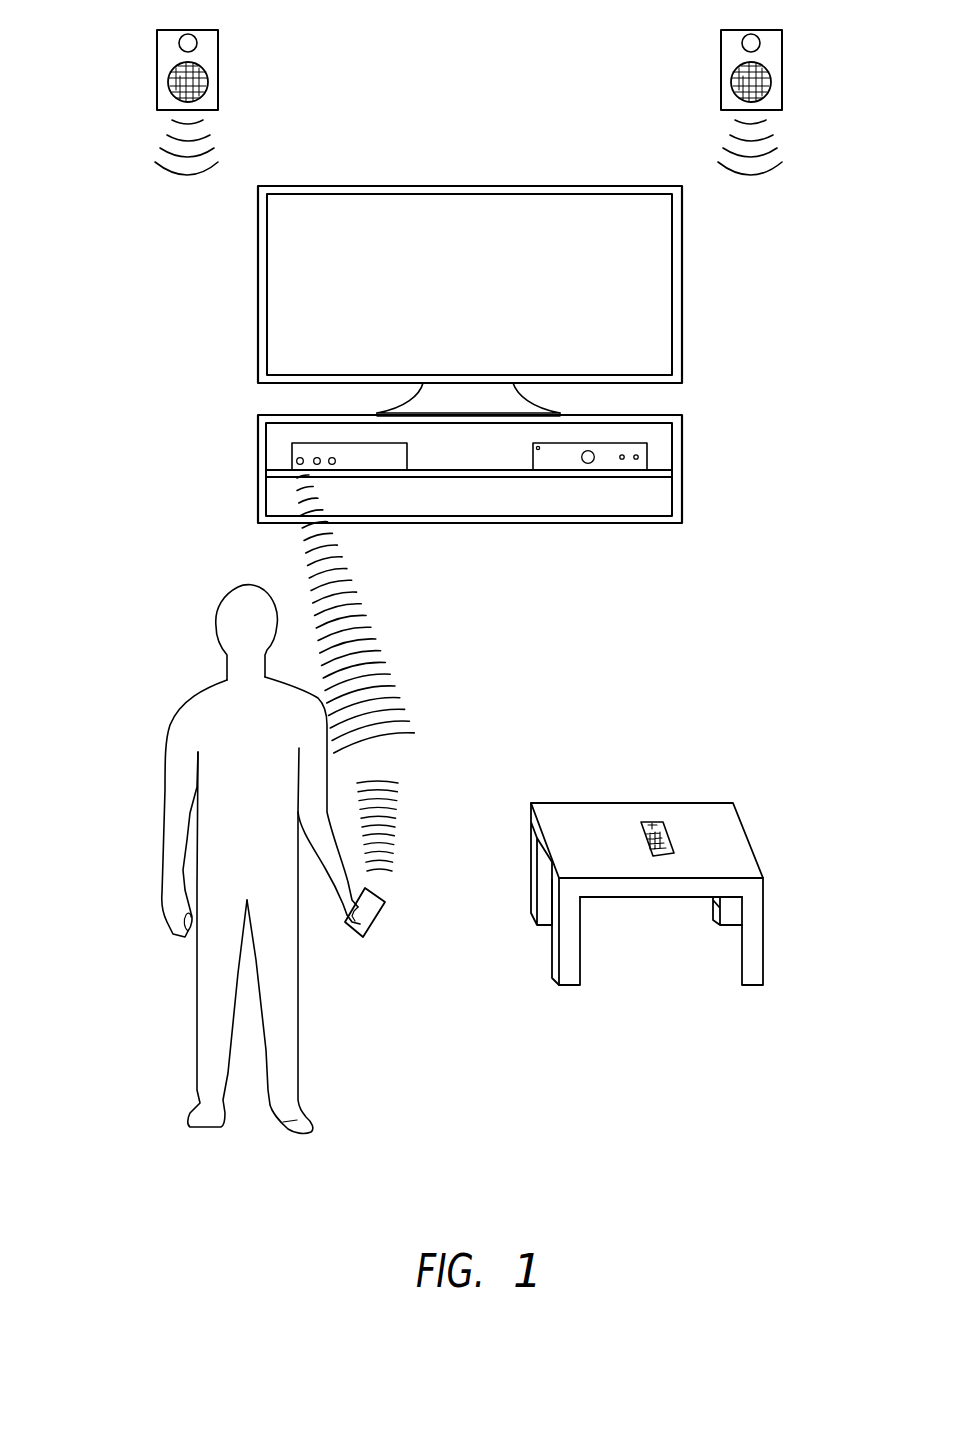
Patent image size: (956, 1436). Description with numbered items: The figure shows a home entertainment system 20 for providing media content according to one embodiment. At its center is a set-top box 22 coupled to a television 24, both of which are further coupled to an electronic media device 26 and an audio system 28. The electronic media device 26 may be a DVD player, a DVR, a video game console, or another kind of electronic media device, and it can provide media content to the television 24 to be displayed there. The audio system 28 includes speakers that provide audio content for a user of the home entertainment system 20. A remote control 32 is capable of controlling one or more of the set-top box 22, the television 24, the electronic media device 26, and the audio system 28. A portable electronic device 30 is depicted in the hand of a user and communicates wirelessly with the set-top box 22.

The home entertainment system 20 is at (158, 337).
The set-top box 22 is at (407, 464).
The television 24 is at (682, 284).
The electronic media device 26 is at (533, 464).
The audio system 28 is at (218, 68).
The portable electronic device 30 is at (385, 917).
The remote control 32 is at (668, 832).